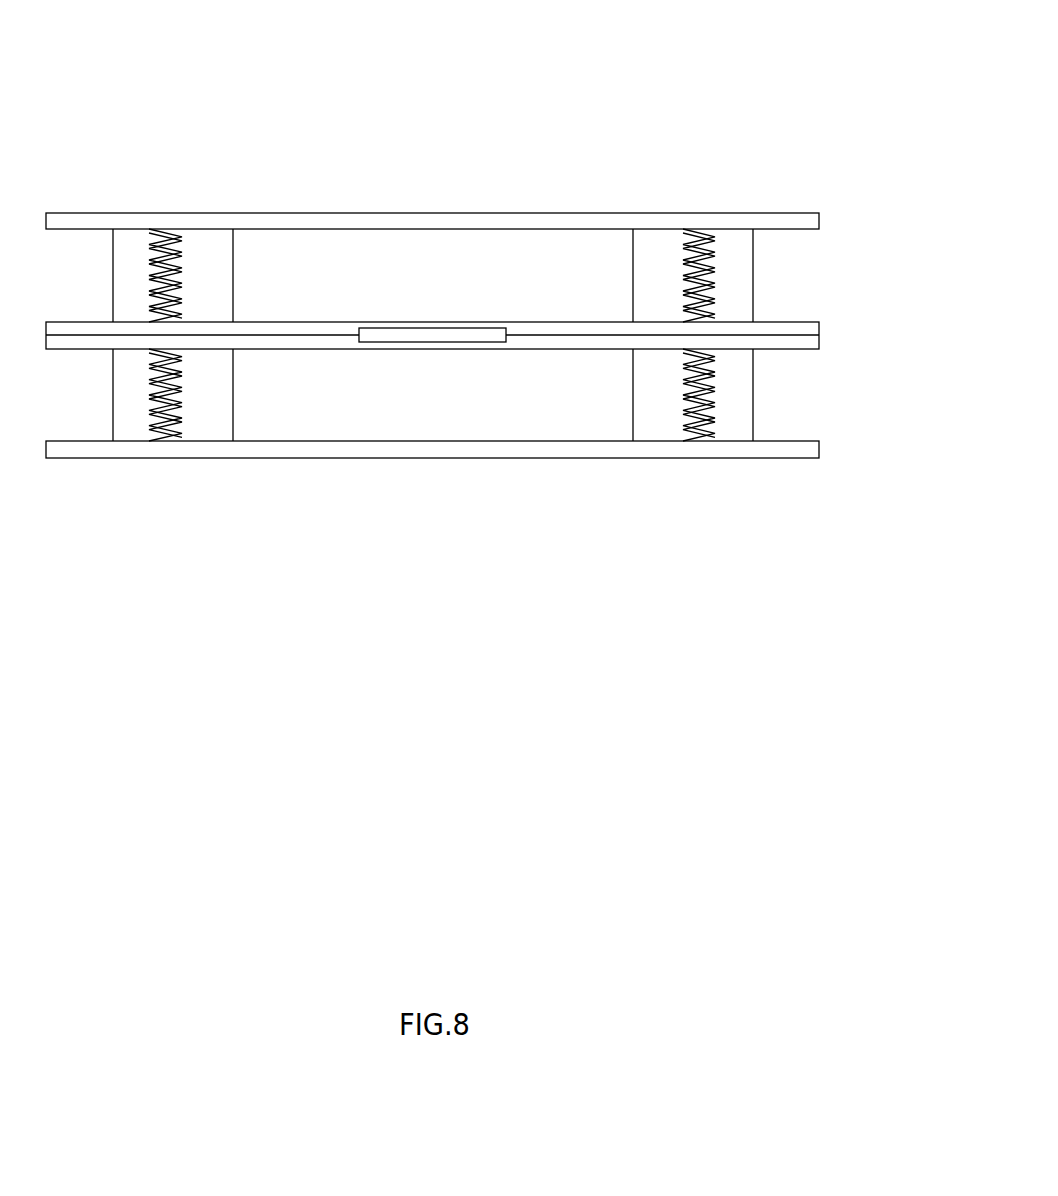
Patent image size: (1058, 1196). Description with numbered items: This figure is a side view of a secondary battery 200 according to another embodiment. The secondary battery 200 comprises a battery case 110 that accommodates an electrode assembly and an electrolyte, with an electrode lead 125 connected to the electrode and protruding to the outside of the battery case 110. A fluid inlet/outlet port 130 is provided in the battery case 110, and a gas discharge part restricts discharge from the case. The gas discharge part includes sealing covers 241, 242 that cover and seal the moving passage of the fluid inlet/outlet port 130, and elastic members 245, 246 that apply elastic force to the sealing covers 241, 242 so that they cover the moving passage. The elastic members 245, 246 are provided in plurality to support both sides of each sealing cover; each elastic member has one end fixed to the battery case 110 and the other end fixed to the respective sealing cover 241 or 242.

The secondary battery 200 is at (738, 44).
The sealing cover 241 is at (819, 219).
The sealing cover 242 is at (819, 447).
The battery case 110 is at (802, 305).
The electrode lead 125 is at (380, 328).
The fluid inlet/outlet port 130 is at (633, 275).
The elastic member 245 is at (696, 252).
The elastic member 246 is at (696, 418).